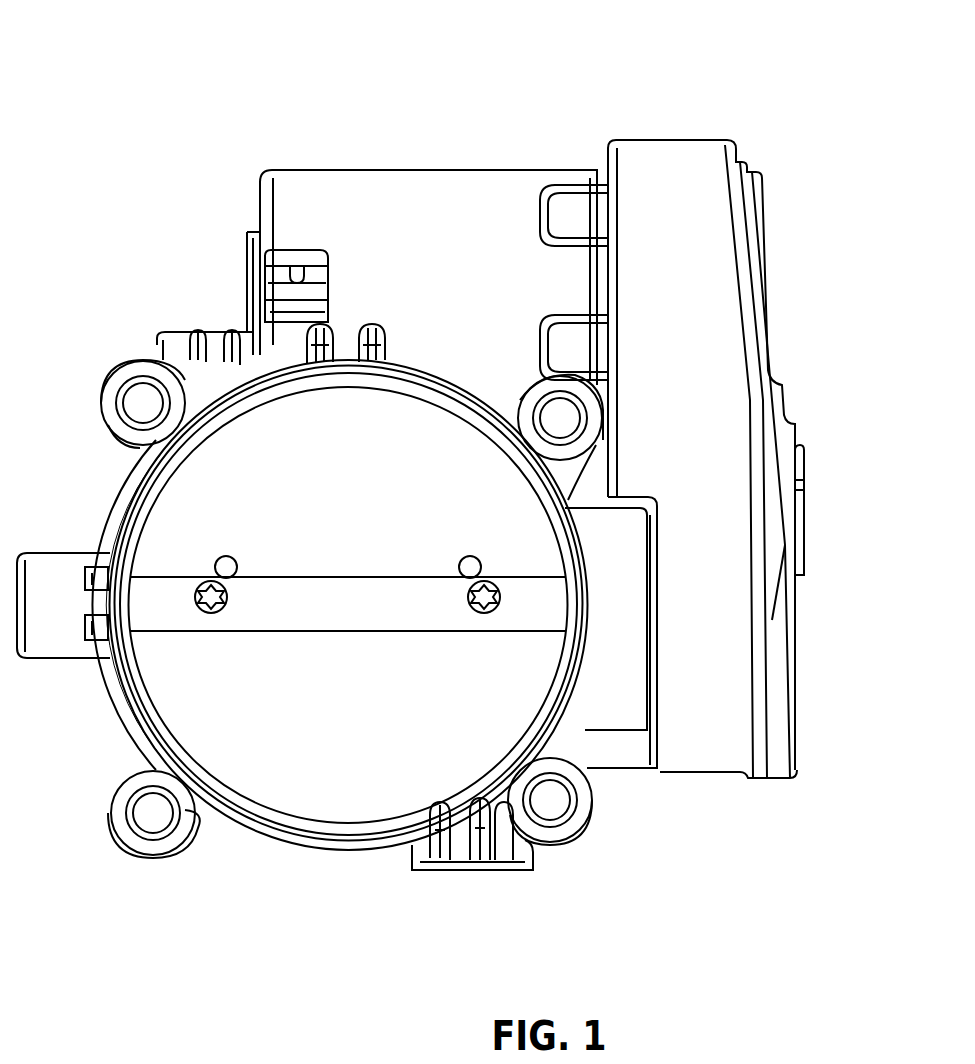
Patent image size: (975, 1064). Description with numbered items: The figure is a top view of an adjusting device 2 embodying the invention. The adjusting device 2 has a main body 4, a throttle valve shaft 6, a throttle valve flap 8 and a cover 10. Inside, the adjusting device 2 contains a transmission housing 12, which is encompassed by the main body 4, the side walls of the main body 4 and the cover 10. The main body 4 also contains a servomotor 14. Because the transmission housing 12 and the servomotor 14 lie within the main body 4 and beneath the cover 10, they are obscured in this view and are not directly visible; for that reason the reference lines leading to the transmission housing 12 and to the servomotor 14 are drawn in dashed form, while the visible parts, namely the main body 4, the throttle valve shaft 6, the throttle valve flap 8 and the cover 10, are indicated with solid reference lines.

The adjusting device 2 is at (518, 117).
The main body 4 is at (622, 712).
The throttle valve shaft 6 is at (352, 595).
The throttle valve flap 8 is at (353, 800).
The cover 10 is at (776, 755).
The transmission housing 12 is at (700, 730).
The servomotor 14 is at (343, 192).